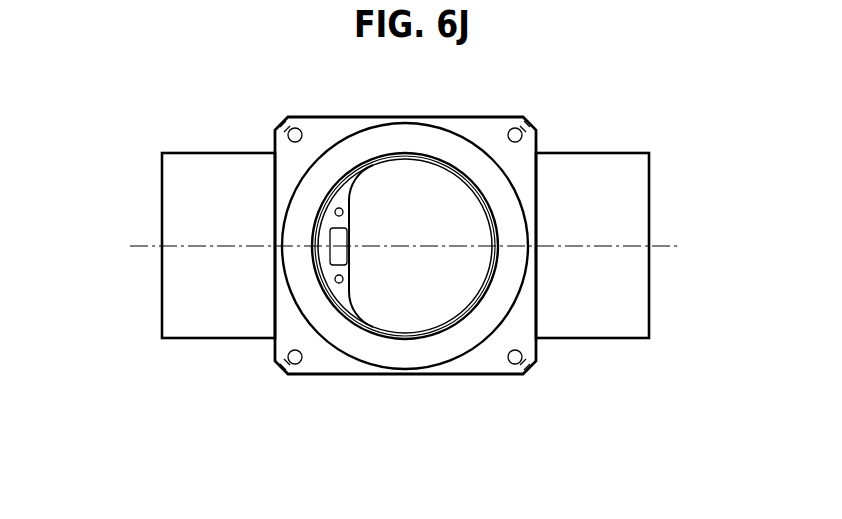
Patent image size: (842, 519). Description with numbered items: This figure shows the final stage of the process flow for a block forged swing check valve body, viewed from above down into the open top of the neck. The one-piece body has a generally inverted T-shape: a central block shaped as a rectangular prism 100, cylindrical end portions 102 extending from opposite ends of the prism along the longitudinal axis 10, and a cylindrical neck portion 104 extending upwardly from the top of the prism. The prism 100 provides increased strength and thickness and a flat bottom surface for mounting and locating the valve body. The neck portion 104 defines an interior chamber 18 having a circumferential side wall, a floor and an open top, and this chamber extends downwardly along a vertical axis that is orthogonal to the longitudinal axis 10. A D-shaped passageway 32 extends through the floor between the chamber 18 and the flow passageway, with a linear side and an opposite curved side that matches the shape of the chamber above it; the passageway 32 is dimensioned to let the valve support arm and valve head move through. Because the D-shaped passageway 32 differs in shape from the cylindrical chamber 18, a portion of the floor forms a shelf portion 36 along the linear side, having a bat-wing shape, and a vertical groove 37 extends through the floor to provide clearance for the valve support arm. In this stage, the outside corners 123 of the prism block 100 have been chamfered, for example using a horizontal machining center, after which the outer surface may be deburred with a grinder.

The longitudinal axis 10 is at (659, 247).
The interior chamber 18 is at (395, 184).
The D-shaped passageway 32 is at (435, 197).
The shelf portion 36 is at (327, 263).
The vertical groove 37 is at (350, 258).
The rectangular prism 100 is at (480, 365).
The cylindrical end portions 102 is at (622, 152).
The cylindrical neck portion 104 is at (431, 357).
The outside corners 123 is at (287, 120).